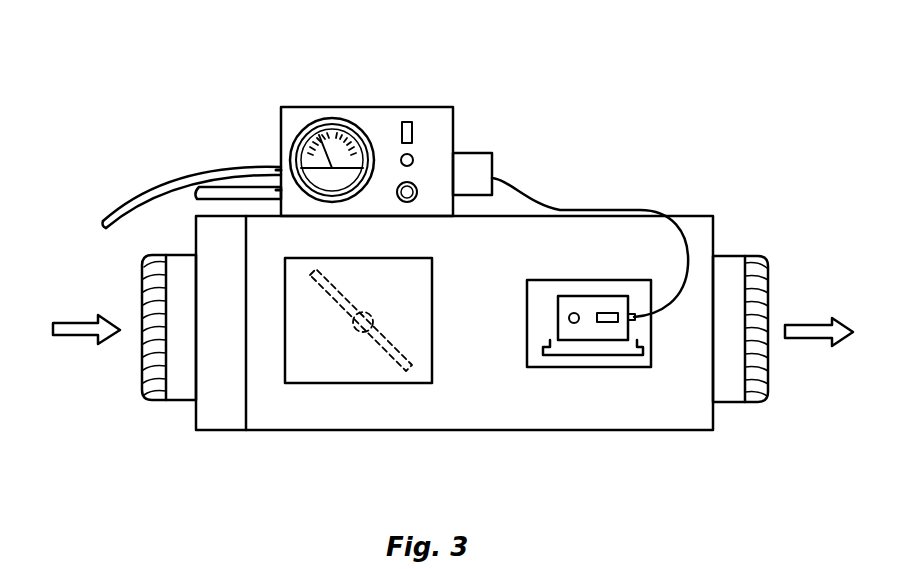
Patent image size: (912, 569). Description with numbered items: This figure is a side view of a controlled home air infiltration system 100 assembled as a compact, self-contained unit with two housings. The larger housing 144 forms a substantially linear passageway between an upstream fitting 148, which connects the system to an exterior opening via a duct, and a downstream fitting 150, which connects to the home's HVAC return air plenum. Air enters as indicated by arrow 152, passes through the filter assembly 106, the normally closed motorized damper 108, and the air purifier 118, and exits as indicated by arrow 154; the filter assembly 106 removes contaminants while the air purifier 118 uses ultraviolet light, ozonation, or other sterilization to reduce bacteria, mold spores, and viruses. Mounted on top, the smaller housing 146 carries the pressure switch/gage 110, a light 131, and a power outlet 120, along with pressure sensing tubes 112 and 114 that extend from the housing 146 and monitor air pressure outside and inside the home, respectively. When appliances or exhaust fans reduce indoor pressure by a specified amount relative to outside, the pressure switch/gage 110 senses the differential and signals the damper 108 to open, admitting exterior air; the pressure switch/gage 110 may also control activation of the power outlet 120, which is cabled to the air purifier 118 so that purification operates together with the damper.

The controlled home air infiltration system 100 is at (183, 103).
The filter assembly 106 is at (210, 238).
The motorized damper 108 is at (362, 368).
The pressure switch/gage 110 is at (332, 122).
The pressure sensing tube 112 is at (225, 183).
The pressure sensing tube 114 is at (160, 180).
The air purifier 118 is at (595, 296).
The power outlet 120 is at (473, 153).
The light 131 is at (400, 194).
The housing 144 is at (438, 430).
The housing 146 is at (368, 106).
The fitting 148 is at (142, 355).
The fitting 150 is at (768, 357).
The arrow 152 is at (80, 320).
The arrow 154 is at (800, 322).